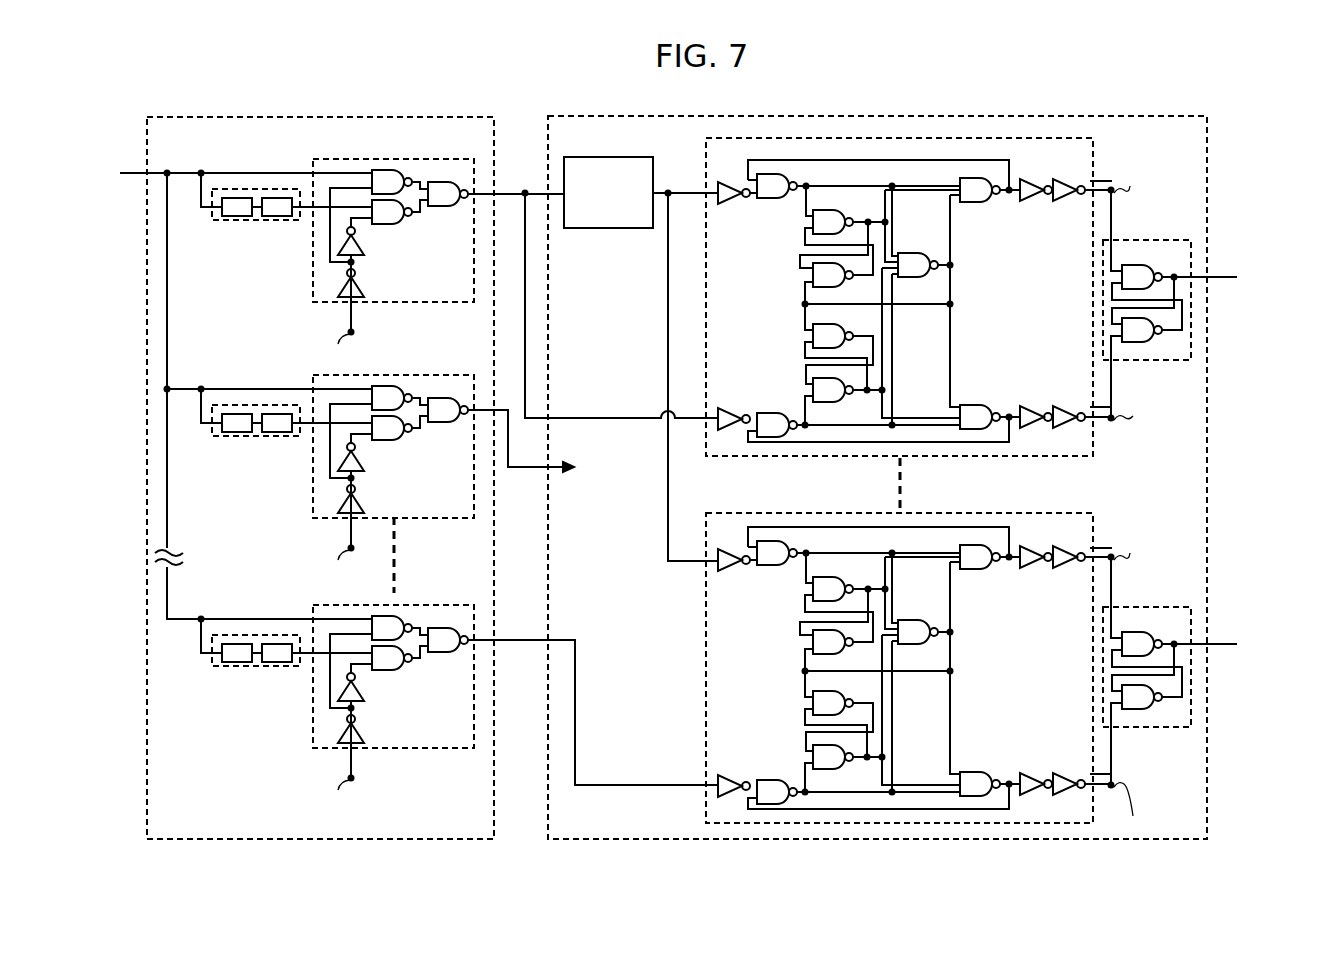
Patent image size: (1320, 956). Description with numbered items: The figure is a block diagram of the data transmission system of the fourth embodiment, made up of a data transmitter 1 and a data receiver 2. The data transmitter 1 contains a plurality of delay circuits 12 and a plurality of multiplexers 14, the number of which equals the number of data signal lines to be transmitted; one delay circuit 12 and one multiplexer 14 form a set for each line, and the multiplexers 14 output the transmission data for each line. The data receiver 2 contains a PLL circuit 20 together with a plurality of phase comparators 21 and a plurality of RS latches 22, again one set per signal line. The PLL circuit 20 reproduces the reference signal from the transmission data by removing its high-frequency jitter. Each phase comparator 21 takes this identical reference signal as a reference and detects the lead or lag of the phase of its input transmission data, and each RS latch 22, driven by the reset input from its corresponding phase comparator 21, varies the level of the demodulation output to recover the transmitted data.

The data transmitter 1 is at (400, 460).
The data receiver 2 is at (906, 459).
The delay circuit 12 is at (275, 226).
The multiplexer 14 is at (311, 282).
The PLL circuit 20 is at (608, 192).
The phase comparator 21 is at (1093, 138).
The RS latch 22 is at (1125, 239).